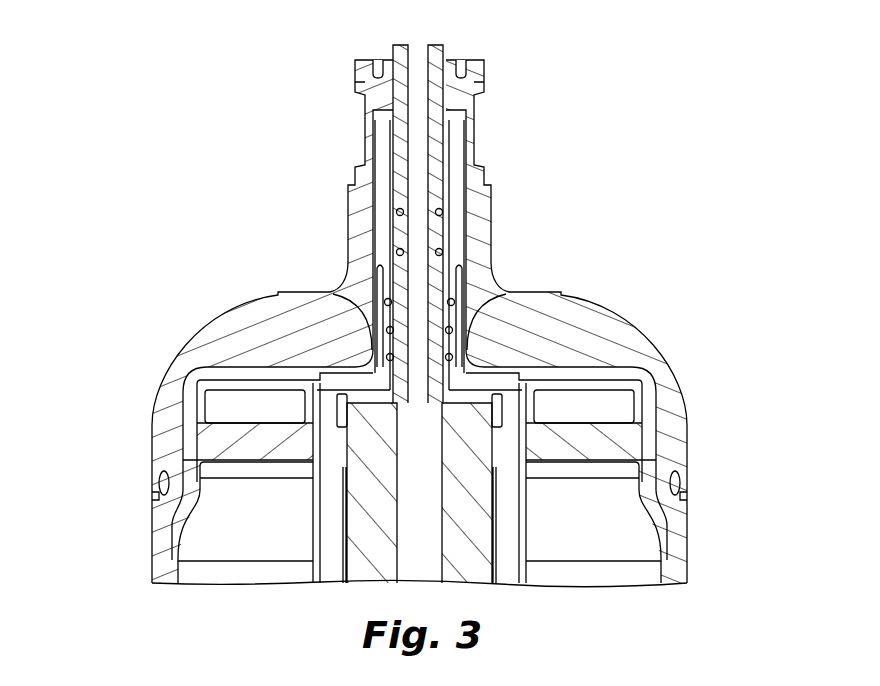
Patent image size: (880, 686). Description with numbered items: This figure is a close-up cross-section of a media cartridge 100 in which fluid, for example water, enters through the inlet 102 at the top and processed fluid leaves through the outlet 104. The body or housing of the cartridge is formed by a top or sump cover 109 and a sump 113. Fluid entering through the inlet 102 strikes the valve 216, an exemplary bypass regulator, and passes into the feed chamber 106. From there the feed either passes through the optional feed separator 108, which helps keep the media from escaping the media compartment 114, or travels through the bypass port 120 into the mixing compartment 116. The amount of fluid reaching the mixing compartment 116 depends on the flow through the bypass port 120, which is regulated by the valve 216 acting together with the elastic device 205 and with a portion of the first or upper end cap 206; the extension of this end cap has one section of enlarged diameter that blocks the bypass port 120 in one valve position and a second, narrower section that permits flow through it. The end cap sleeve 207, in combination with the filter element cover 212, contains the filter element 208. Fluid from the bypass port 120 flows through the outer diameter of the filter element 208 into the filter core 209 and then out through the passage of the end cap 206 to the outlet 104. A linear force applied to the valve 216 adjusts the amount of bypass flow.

The media cartridge 100 is at (548, 81).
The inlet 102 is at (372, 119).
The outlet 104 is at (418, 50).
The feed chamber 106 is at (485, 370).
The feed separator 108 is at (212, 406).
The sump cover 109 is at (165, 443).
The sump 113 is at (158, 562).
The media compartment 114 is at (613, 577).
The mixing compartment 116 is at (507, 420).
The bypass port 120 is at (393, 232).
The elastic device 205 is at (455, 315).
The first/upper end cap 206 is at (318, 412).
The end cap sleeve 207 is at (350, 378).
The filter element 208 is at (478, 572).
The filter core 209 is at (416, 574).
The filter element cover 212 is at (192, 530).
The valve 216 is at (392, 188).